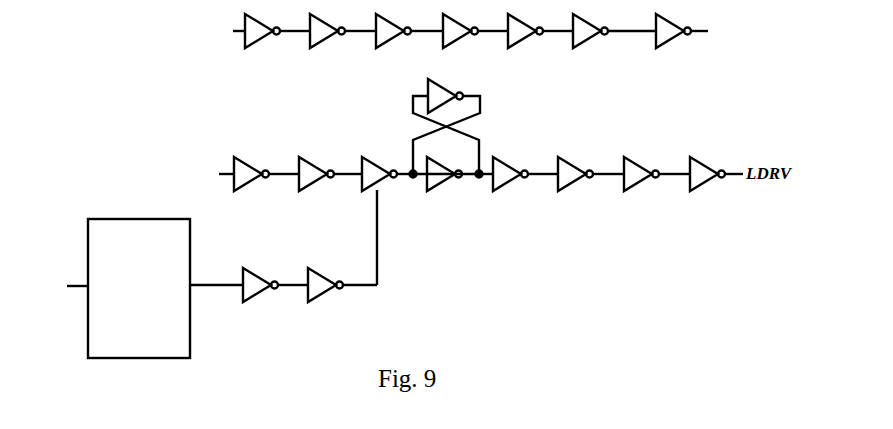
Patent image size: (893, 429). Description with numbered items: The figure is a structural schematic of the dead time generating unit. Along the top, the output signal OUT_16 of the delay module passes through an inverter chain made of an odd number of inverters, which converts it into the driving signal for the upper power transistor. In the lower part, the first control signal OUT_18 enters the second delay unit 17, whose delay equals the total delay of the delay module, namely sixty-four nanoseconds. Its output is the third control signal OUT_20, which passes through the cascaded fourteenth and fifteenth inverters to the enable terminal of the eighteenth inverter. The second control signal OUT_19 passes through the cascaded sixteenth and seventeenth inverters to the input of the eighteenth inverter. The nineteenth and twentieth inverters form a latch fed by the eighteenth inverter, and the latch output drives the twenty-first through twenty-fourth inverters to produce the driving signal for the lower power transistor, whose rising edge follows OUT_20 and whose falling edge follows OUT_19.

The output signal OUT_16 of the delay module 16 is at (468, 31).
The second delay unit (DELAY17) 17 is at (139, 288).
The first control signal OUT_ 18 is at (51, 287).
The second control signal OUT_ 19 is at (277, 174).
The third control signal OUT_ 20 is at (283, 246).